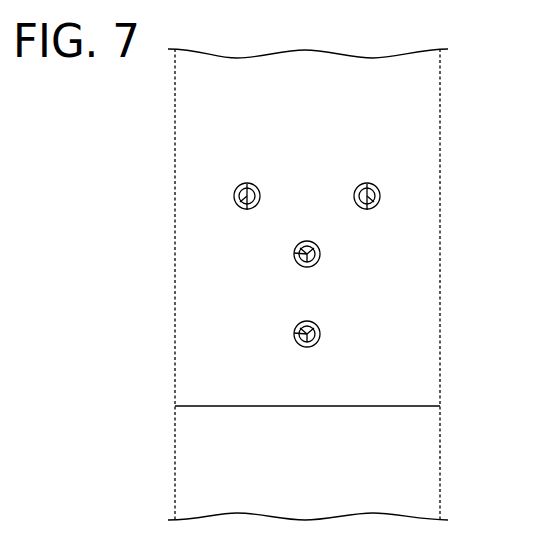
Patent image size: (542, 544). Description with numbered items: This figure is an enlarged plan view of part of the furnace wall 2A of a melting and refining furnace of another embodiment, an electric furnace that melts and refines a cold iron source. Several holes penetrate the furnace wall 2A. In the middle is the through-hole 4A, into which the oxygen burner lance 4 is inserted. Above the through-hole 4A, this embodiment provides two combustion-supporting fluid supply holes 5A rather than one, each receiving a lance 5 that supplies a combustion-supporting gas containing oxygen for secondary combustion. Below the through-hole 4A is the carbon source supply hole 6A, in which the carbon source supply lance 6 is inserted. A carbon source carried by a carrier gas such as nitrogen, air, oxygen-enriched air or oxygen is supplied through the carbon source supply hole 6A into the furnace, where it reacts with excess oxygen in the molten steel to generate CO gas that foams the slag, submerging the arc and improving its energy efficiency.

The furnace wall 2A is at (420, 89).
The oxygen burner lance 4 is at (321, 251).
The through-hole 4A is at (294, 253).
The lance 5 is at (265, 181).
The combustion-supporting fluid supply hole 5A is at (247, 184).
The carbon source supply lance 6 is at (321, 332).
The carbon source supply hole 6A is at (294, 333).